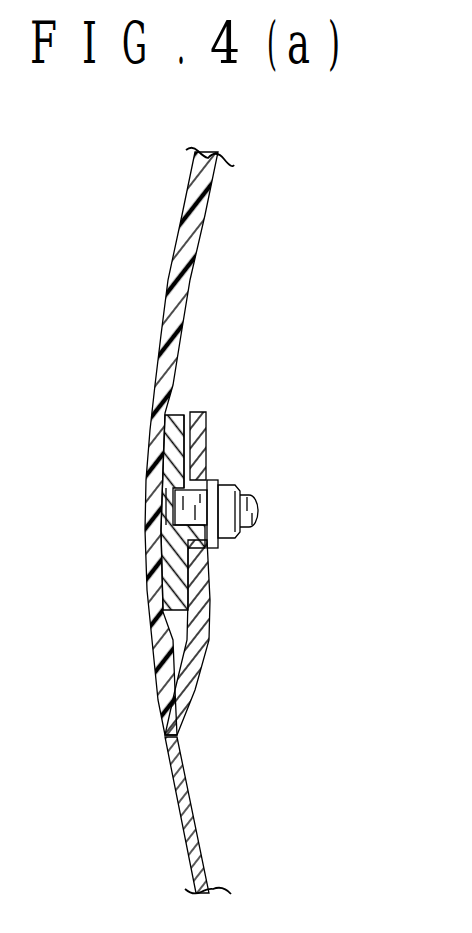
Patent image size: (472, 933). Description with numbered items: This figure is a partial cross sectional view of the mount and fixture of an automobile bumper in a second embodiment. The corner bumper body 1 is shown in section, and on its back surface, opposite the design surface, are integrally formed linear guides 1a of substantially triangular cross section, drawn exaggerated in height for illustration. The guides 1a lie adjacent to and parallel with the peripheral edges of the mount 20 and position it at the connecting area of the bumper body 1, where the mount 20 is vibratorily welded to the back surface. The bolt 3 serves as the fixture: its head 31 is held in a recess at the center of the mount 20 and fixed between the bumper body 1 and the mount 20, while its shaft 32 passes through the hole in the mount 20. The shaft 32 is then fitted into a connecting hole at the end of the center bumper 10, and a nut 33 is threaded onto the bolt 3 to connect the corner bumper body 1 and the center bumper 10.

The corner bumper body 1 is at (158, 303).
The linear guide 1a is at (174, 384).
The center bumper 10 is at (180, 777).
The mount 20 is at (176, 618).
The bolt 3 is at (187, 482).
The head 31 is at (150, 543).
The shaft 32 is at (209, 480).
The nut 33 is at (238, 487).